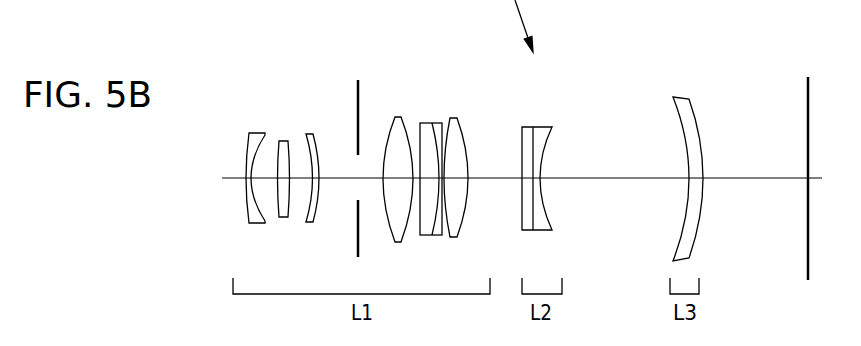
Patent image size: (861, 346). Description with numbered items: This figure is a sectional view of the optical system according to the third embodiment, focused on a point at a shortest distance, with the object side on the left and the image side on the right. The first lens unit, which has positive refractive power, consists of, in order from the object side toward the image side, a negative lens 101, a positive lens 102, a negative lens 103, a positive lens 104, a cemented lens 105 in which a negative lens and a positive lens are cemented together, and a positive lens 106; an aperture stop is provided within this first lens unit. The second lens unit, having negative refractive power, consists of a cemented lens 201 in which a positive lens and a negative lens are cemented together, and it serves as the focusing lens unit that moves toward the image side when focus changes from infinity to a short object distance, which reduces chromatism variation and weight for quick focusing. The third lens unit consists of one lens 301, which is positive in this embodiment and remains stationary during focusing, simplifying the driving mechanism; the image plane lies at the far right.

The negative lens 101 is at (261, 133).
The positive lens 102 is at (280, 140).
The negative lens 103 is at (313, 134).
The positive lens 104 is at (398, 116).
The cemented lens 105 is at (443, 115).
The positive lens 106 is at (453, 117).
The cemented lens 201 is at (553, 122).
The lens of third lens unit 301 is at (682, 97).